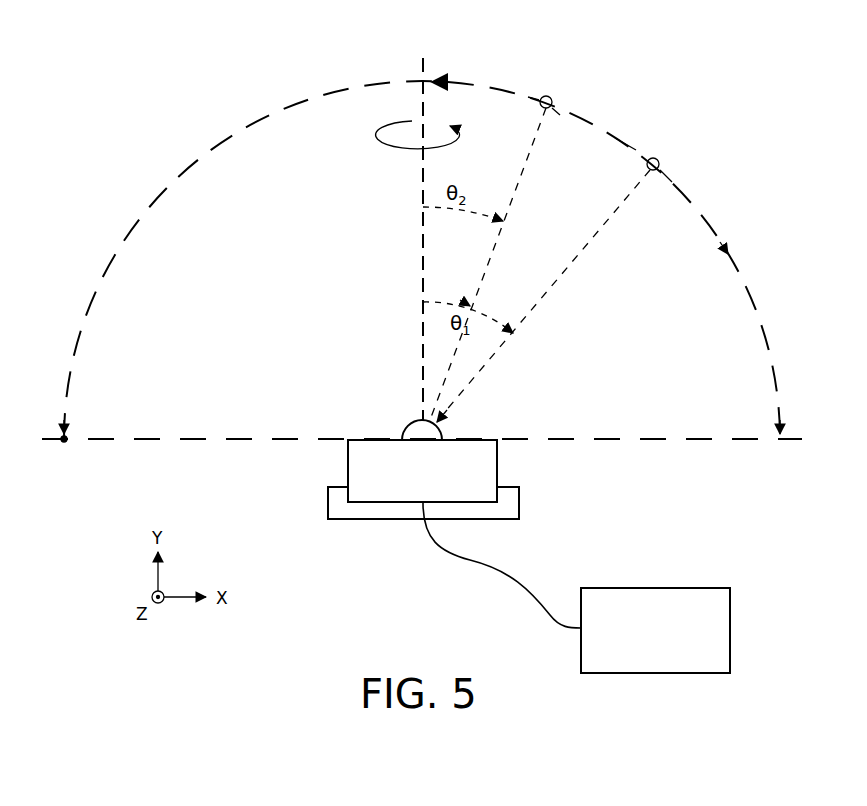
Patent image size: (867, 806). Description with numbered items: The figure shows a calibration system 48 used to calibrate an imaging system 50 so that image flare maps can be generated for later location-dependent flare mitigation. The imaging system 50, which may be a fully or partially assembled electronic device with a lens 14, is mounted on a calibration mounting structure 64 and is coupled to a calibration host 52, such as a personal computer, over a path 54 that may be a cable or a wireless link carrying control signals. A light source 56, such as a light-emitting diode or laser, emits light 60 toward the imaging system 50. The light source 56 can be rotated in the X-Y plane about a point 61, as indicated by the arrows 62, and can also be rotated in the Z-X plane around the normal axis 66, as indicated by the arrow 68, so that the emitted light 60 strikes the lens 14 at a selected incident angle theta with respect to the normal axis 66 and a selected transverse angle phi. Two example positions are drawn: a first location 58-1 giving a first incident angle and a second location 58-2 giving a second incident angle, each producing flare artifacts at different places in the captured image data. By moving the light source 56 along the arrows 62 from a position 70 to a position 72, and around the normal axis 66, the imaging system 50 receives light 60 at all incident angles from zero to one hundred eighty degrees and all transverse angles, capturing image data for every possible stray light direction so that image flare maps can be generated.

The calibration system 48 is at (254, 43).
The lens 14 is at (410, 426).
The imaging system 50 is at (486, 464).
The calibration host 52 is at (681, 590).
The path 54 is at (492, 568).
The light source 56 is at (554, 102).
The first location 58-1 is at (657, 139).
The second location 58-2 is at (548, 86).
The emitted light 60 is at (519, 178).
The point 61 is at (442, 431).
The arrows 62 is at (96, 290).
The calibration mounting structure 64 is at (380, 514).
The normal axis 66 is at (422, 250).
The arrow 68 is at (396, 146).
The position 70 is at (64, 442).
The position 72 is at (780, 442).